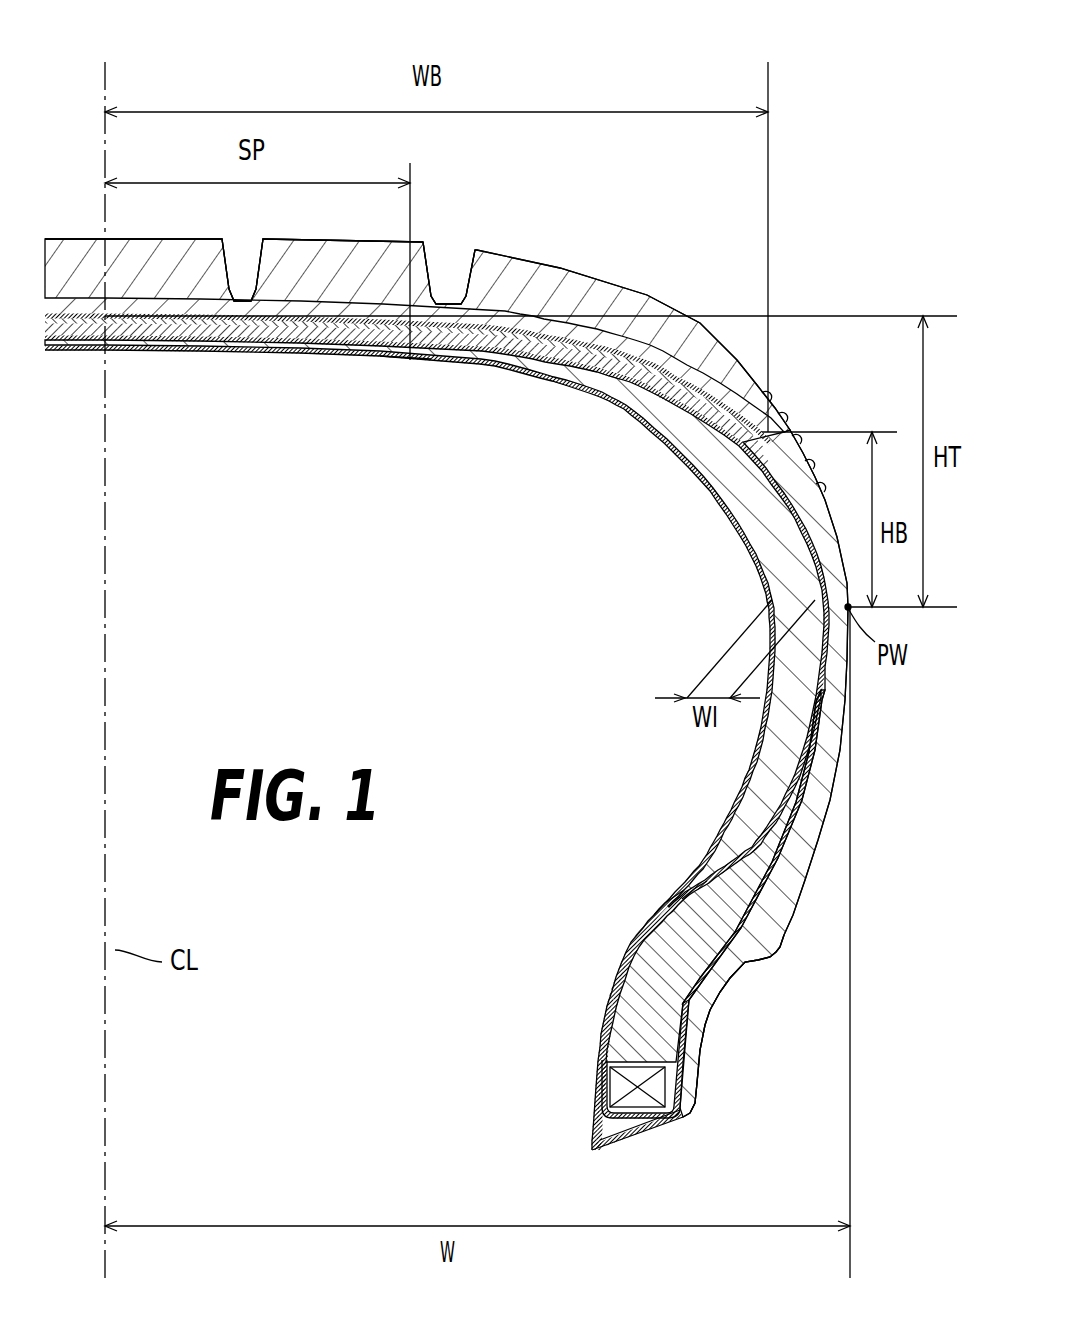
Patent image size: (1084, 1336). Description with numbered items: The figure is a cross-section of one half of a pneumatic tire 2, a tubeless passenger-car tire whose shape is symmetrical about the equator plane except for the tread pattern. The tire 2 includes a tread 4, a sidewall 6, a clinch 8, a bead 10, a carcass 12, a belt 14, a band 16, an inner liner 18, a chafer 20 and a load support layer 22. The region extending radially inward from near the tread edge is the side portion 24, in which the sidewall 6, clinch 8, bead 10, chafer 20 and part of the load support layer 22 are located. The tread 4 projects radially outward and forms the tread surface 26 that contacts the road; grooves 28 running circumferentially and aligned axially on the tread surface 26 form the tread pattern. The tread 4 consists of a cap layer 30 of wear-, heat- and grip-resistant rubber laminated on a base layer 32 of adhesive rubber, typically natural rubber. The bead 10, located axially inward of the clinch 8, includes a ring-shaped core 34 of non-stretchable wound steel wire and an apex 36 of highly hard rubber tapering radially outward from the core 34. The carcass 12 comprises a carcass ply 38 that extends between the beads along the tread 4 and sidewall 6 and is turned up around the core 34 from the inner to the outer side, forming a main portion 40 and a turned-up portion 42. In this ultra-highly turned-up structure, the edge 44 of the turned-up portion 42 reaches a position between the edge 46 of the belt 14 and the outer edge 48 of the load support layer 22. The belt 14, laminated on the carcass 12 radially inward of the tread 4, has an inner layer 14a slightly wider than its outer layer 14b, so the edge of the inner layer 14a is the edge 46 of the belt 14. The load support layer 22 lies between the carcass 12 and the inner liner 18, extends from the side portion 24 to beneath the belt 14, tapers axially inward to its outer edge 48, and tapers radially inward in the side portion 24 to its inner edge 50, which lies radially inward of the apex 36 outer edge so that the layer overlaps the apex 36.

The pneumatic tire 2 is at (457, 24).
The tread 4 is at (417, 292).
The sidewall 6 is at (843, 705).
The clinch 8 is at (722, 975).
The bead 10 is at (625, 902).
The carcass 12 is at (435, 744).
The belt 14 is at (403, 403).
The inner layer 14a is at (228, 327).
The outer layer 14b is at (266, 322).
The band 16 is at (142, 318).
The inner liner 18 is at (550, 381).
The chafer 20 is at (640, 1128).
The load support layer 22 is at (700, 450).
The side portion 24 is at (877, 310).
The tread surface 26 is at (75, 237).
The groove 28 is at (459, 268).
The cap layer 30 is at (637, 305).
The base layer 32 is at (527, 321).
The core 34 is at (615, 1083).
The apex 36 is at (632, 1008).
The carcass ply 38 is at (70, 338).
The main portion 40 is at (660, 912).
The turned-up portion 42 is at (781, 949).
The edge of the turned-up portion 44 is at (527, 352).
The edge of the belt 46 is at (788, 412).
The outer edge of the load support layer 48 is at (398, 357).
The inner edge of the load support layer 50 is at (690, 892).